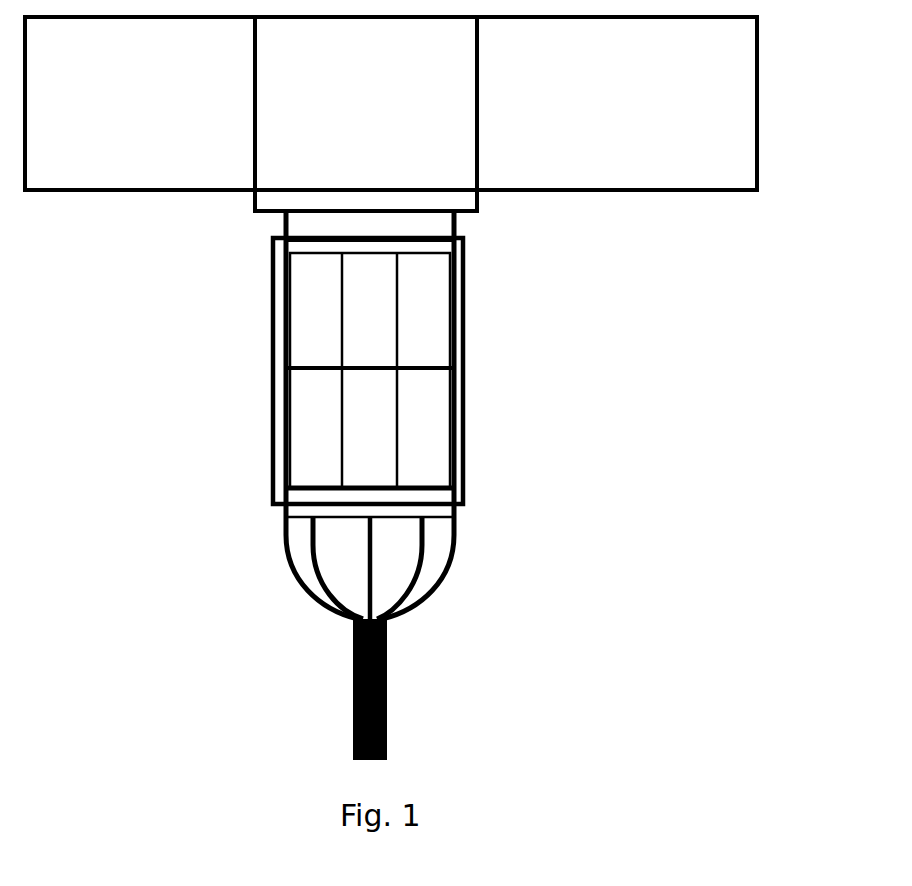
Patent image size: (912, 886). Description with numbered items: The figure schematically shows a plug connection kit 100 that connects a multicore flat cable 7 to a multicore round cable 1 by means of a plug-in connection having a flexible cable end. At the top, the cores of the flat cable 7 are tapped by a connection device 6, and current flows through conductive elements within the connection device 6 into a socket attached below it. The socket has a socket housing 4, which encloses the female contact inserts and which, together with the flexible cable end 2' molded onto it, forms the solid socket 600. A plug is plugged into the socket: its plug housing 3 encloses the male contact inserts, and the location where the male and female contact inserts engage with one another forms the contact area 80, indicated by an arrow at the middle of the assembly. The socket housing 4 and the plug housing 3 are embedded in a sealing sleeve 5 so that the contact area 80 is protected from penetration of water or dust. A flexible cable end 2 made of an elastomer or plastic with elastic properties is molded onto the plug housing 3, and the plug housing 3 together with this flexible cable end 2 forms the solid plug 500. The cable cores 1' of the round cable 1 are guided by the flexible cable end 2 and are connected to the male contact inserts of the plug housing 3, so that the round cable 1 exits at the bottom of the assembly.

The round cable 1 is at (408, 689).
The cable cores 1' is at (353, 584).
The flexible cable end 2 is at (397, 565).
The flexible cable end 2' is at (324, 220).
The plug housing 3 is at (303, 428).
The socket housing 4 is at (302, 297).
The sealing sleeve 5 is at (467, 380).
The connection device 6 is at (478, 202).
The flat cable 7 is at (97, 190).
The contact area 80 is at (263, 369).
The plug connection kit 100 is at (636, 430).
The solid plug 500 is at (477, 517).
The solid socket 600 is at (482, 261).